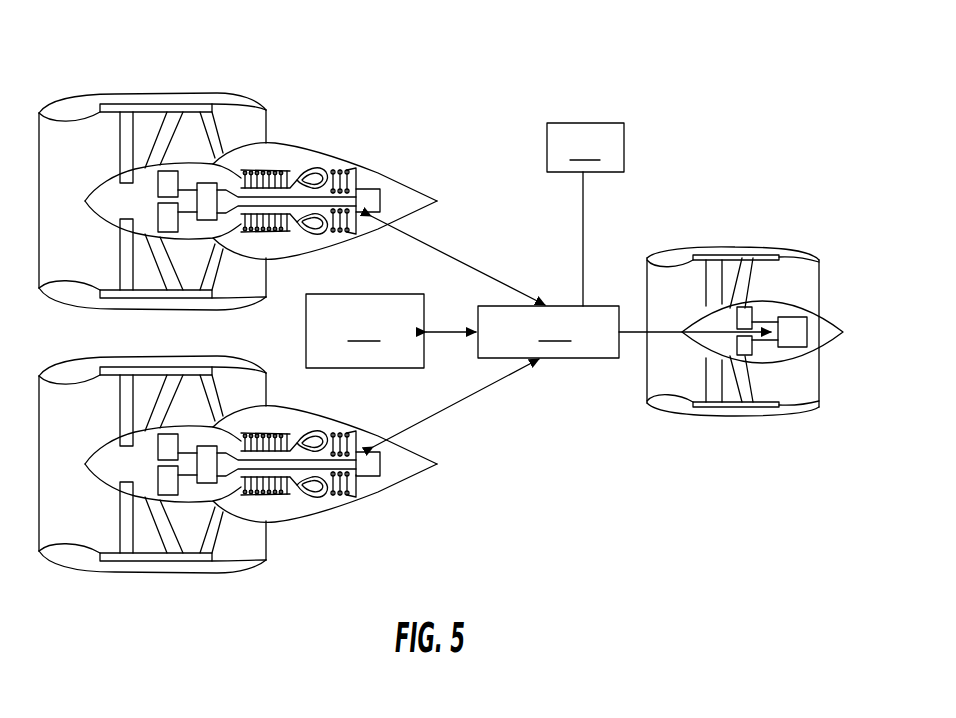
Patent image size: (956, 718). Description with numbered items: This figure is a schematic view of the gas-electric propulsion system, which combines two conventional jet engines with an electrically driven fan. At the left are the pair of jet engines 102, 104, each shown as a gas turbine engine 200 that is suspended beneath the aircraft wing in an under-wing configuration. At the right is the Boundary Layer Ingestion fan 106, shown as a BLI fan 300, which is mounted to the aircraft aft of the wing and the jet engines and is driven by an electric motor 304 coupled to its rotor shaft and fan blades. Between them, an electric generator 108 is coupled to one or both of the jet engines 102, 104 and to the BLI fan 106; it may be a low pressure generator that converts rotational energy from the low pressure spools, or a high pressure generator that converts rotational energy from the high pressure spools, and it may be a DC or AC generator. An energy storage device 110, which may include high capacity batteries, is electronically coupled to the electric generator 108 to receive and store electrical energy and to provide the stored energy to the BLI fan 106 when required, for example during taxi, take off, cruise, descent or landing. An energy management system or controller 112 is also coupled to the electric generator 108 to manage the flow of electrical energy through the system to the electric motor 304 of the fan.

The jet engine 102 is at (110, 598).
The jet engine 104 is at (227, 80).
The Boundary Layer Ingestion (BLI) fan 106 is at (771, 230).
The electric generator 108 is at (548, 332).
The energy storage device 110 is at (365, 331).
The energy management system or controller 112 is at (585, 214).
The gas turbine engine 200 is at (219, 91).
The BLI fan 300 is at (769, 235).
The electric motor 304 is at (795, 325).